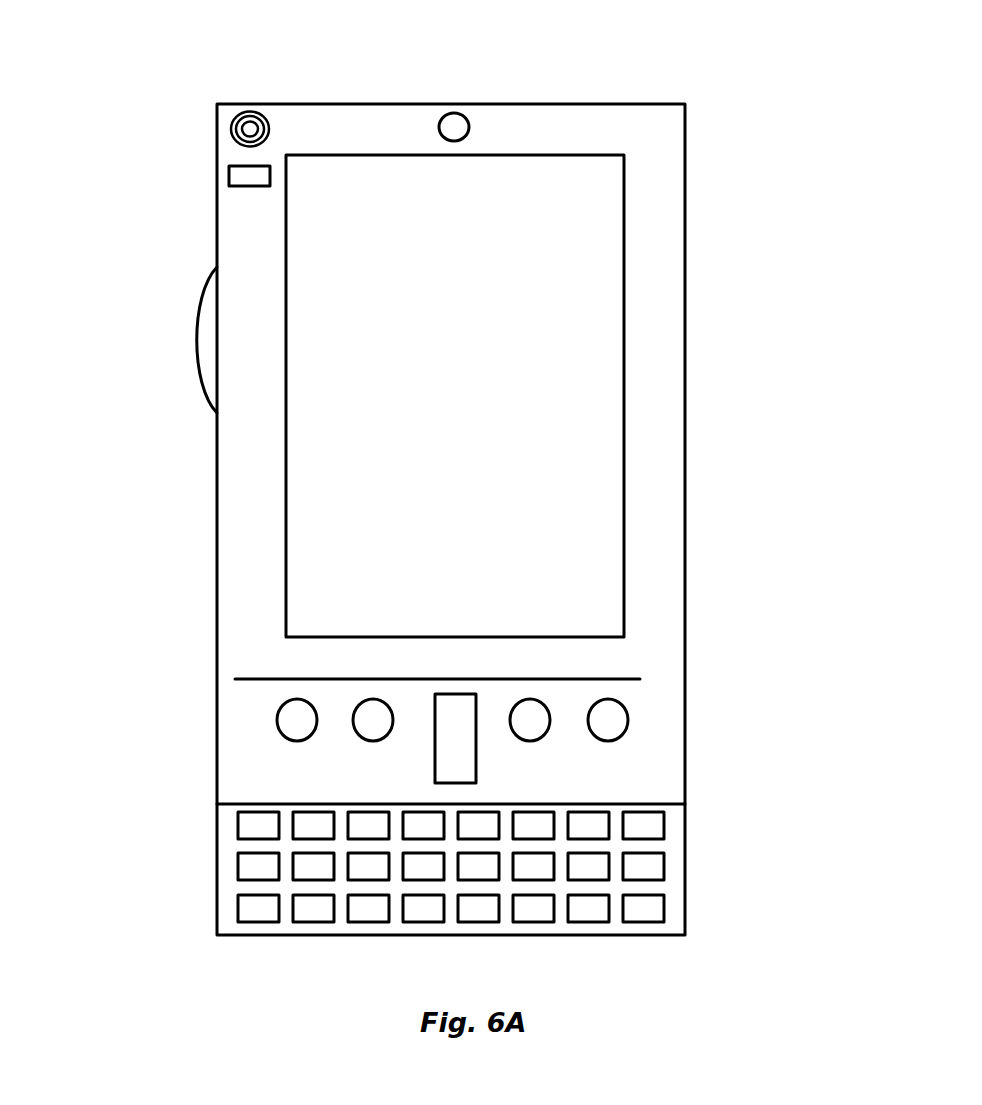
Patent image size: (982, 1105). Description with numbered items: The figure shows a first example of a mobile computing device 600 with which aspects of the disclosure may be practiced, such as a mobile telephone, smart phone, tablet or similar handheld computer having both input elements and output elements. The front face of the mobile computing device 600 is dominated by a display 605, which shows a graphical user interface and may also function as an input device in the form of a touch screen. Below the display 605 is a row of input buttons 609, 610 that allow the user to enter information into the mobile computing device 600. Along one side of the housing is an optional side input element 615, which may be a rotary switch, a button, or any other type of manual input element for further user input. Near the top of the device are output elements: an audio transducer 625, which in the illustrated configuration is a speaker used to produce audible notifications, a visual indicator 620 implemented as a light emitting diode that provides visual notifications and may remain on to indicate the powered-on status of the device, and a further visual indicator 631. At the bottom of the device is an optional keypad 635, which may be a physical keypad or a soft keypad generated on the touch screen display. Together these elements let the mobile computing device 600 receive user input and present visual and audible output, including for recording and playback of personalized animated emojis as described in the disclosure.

The mobile computing device 600 is at (673, 120).
The display 605 is at (392, 555).
The input button 609 is at (453, 745).
The input button 610 is at (607, 717).
The side input element 615 is at (208, 338).
The visual indicator 620 is at (232, 180).
The audio transducer 625 is at (232, 131).
The visual indicator 631 is at (465, 125).
The keypad 635 is at (225, 913).